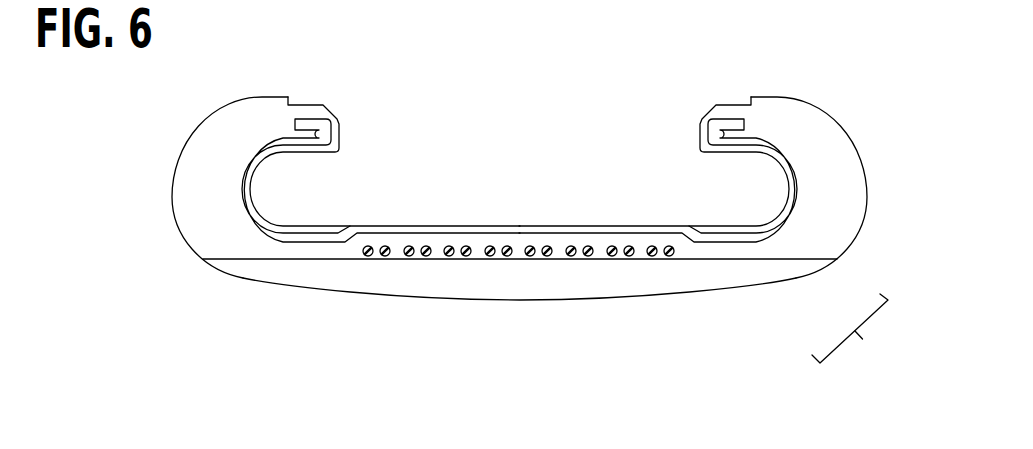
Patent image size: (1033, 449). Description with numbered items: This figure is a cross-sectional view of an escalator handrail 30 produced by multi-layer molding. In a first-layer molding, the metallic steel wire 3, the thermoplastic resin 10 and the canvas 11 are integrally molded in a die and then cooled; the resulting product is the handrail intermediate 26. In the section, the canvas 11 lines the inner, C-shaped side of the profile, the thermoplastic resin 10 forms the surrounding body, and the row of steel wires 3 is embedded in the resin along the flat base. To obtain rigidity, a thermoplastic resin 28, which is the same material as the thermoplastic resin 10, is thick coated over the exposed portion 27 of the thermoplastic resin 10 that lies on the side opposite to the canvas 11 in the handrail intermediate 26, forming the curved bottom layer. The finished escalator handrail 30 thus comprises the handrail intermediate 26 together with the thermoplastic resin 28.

The thermoplastic resin 10 is at (182, 151).
The canvas 11 is at (381, 226).
The metallic steel wire 3 is at (368, 254).
The handrail intermediate 26 is at (863, 222).
The exposed portion 27 is at (308, 259).
The thermoplastic resin 28 is at (732, 288).
The escalator handrail 30 is at (914, 366).